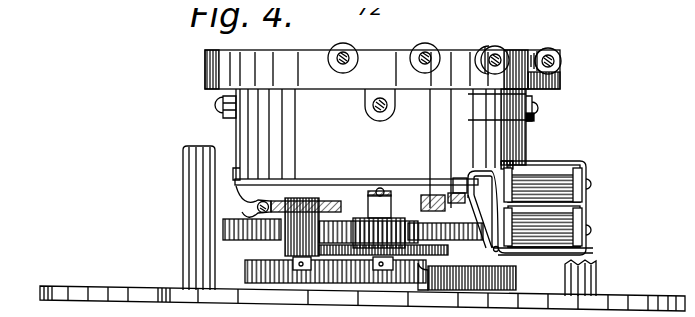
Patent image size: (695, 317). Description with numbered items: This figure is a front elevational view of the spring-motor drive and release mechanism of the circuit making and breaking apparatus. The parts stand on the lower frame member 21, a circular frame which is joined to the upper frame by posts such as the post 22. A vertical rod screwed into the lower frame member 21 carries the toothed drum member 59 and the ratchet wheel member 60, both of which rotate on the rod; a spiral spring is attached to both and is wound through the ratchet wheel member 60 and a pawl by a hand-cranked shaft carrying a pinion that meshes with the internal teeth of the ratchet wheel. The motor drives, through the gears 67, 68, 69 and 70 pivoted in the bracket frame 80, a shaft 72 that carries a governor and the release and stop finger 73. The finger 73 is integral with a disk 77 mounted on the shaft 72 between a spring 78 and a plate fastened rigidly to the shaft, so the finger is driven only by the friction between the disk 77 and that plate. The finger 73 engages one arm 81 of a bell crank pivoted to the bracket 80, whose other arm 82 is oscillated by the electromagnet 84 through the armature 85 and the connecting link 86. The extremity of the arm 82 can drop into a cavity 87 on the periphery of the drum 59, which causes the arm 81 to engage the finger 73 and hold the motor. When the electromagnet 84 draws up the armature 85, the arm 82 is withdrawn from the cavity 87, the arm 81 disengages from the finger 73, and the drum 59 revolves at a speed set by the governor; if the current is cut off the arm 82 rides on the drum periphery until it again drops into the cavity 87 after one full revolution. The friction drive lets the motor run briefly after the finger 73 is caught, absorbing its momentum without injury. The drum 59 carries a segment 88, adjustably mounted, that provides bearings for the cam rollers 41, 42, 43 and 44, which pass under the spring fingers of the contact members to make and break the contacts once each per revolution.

The lower frame member 21 is at (127, 285).
The post 22 is at (590, 270).
The cam roller 41 is at (342, 49).
The cam roller 42 is at (425, 48).
The cam roller 43 is at (497, 46).
The cam roller 44 is at (551, 47).
The toothed drum member 59 is at (538, 104).
The ratchet wheel member 60 is at (508, 267).
The gear 67 is at (395, 250).
The gear 68 is at (343, 240).
The gear 69 is at (298, 236).
The gear 70 is at (278, 195).
The shaft 72 is at (246, 216).
The release and stop finger 73 is at (235, 170).
The disk 77 is at (248, 192).
The spring 78 is at (240, 205).
The bracket frame 80 is at (313, 171).
The arm of bell crank 81 is at (336, 176).
The arm of bell crank 82 is at (430, 190).
The electromagnet 84 is at (538, 223).
The armature 85 is at (488, 196).
The connecting link 86 is at (462, 165).
The cavity 87 is at (430, 240).
The segment 88 is at (233, 58).